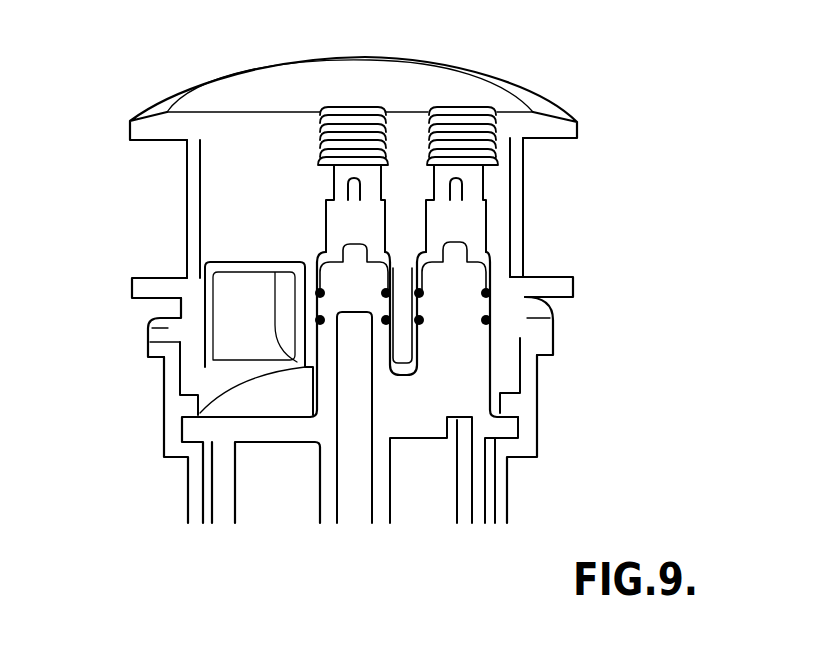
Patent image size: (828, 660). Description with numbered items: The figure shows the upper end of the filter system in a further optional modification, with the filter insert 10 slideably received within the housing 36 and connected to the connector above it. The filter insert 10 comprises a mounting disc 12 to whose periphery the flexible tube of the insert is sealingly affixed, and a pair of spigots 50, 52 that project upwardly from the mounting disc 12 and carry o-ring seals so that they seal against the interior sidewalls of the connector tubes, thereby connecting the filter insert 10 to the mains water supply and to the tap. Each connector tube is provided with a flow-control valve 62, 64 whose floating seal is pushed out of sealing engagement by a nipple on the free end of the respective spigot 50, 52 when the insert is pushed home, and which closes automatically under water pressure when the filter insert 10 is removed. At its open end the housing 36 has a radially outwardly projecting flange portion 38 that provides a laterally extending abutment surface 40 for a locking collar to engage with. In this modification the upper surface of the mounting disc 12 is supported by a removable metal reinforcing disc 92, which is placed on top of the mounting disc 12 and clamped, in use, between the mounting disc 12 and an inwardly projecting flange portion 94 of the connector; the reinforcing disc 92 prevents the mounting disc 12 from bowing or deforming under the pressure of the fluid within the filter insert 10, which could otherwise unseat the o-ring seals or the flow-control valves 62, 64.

The filter insert 10 is at (274, 518).
The mounting disc 12 is at (265, 428).
The housing 36 is at (503, 490).
The flange portion 38 is at (147, 352).
The abutment surface 40 is at (167, 330).
The spigot 50 is at (458, 293).
The spigot 52 is at (340, 287).
The flow-control valve 62 is at (463, 220).
The flow-control valve 64 is at (347, 218).
The reinforcing disc 92 is at (245, 395).
The inwardly projecting flange portion 94 is at (187, 405).